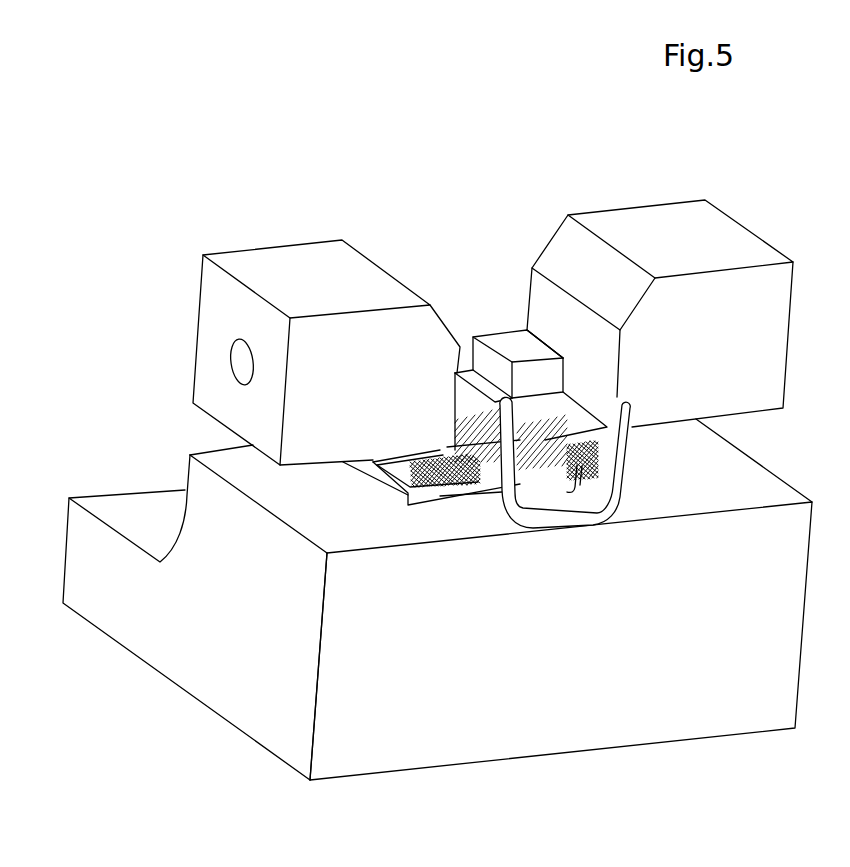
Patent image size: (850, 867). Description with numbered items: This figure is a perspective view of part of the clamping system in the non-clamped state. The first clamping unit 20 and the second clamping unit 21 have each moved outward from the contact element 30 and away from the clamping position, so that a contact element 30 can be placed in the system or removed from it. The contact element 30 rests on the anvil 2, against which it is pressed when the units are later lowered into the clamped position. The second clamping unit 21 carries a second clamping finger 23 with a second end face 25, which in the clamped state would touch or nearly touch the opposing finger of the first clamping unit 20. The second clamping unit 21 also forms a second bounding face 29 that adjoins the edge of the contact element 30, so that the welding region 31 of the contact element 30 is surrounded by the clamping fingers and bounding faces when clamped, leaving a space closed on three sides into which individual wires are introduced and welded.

The anvil 2 is at (383, 480).
The first clamping unit 20 is at (277, 260).
The second clamping unit 21 is at (718, 238).
The second clamping finger 23 is at (497, 342).
The second end face 25 is at (483, 367).
The second bounding face 29 is at (593, 375).
The contact element 30 is at (563, 505).
The welding region 31 is at (475, 440).